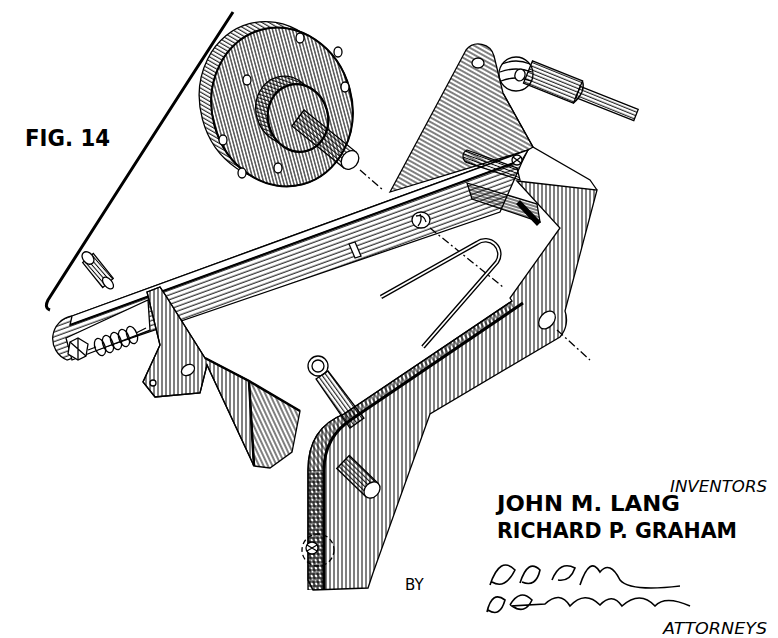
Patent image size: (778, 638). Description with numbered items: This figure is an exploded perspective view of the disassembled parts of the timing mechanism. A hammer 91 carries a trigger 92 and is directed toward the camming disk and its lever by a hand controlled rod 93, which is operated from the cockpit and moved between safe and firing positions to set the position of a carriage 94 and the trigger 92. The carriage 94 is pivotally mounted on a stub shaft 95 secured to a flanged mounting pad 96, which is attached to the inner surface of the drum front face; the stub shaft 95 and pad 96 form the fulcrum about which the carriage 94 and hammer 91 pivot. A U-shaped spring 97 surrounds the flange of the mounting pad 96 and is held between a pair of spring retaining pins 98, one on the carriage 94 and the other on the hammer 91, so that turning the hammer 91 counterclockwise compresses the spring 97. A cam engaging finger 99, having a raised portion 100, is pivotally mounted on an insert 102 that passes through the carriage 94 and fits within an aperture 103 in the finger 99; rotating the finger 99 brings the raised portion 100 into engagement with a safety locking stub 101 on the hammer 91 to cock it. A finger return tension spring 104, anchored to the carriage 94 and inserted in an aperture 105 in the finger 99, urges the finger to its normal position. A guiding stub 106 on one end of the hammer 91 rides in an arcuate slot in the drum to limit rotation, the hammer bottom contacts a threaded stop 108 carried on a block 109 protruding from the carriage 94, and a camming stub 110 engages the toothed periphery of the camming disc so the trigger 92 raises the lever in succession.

The hammer 91 is at (408, 443).
The trigger 92 is at (343, 406).
The hand controlled rod 93 is at (606, 101).
The carriage 94 is at (305, 227).
The stub shaft 95 is at (346, 139).
The flanged mounting pad 96 is at (346, 60).
The U-shaped spring 97 is at (413, 284).
The spring retaining pins 98 is at (352, 258).
The cam engaging finger 99 is at (196, 352).
The raised portion 100 is at (270, 448).
The safety locking stub 101 is at (306, 546).
The insert 102 is at (100, 266).
The aperture 103 is at (188, 378).
The finger return tension spring 104 is at (113, 360).
The aperture 105 is at (153, 387).
The guiding stub 106 is at (500, 142).
The threaded stop 108 is at (522, 162).
The block 109 is at (547, 166).
The camming stub 110 is at (380, 490).